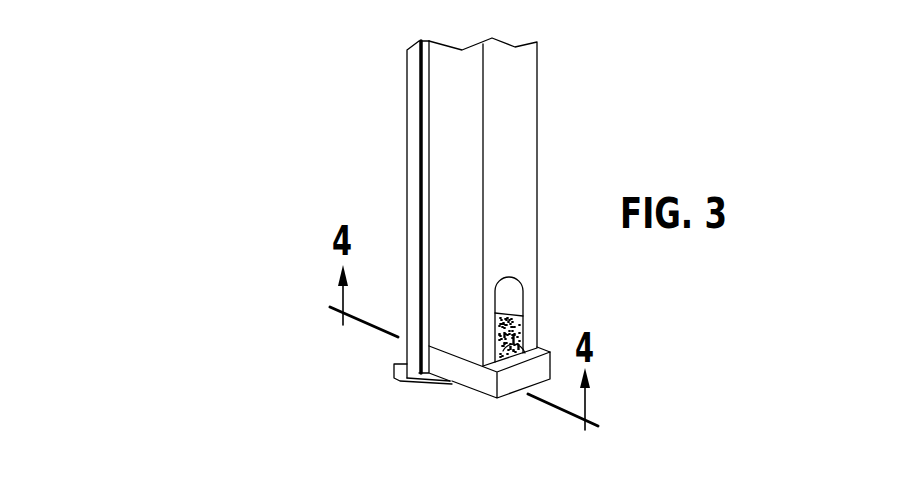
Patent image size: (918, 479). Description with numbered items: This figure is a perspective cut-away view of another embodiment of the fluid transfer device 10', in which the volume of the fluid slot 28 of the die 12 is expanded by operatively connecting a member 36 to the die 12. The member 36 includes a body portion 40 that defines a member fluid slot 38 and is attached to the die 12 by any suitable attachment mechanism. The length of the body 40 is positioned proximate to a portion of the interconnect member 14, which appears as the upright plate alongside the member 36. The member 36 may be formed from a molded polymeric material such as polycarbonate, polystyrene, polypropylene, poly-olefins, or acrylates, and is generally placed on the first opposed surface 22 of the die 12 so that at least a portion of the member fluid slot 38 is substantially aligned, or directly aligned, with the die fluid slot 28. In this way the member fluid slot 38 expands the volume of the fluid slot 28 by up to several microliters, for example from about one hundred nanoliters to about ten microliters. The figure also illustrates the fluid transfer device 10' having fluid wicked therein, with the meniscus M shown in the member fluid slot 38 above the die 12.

The fluid transfer device 10' is at (293, 109).
The interconnect member 14 is at (417, 167).
The member 36 is at (545, 134).
The body portion 40 is at (521, 185).
The member fluid slot 38 is at (508, 290).
The meniscus M is at (497, 314).
The first opposed surface 22 is at (538, 349).
The die 12 is at (505, 387).
The fluid slot 28 is at (525, 353).